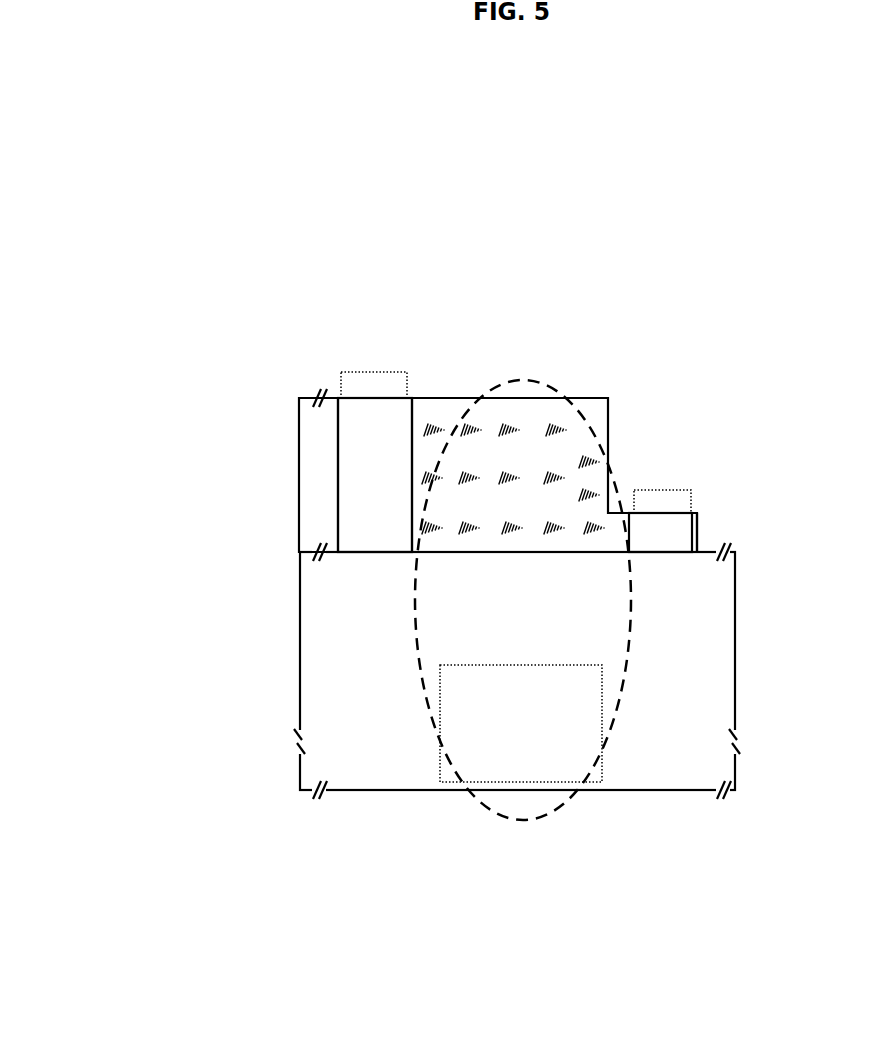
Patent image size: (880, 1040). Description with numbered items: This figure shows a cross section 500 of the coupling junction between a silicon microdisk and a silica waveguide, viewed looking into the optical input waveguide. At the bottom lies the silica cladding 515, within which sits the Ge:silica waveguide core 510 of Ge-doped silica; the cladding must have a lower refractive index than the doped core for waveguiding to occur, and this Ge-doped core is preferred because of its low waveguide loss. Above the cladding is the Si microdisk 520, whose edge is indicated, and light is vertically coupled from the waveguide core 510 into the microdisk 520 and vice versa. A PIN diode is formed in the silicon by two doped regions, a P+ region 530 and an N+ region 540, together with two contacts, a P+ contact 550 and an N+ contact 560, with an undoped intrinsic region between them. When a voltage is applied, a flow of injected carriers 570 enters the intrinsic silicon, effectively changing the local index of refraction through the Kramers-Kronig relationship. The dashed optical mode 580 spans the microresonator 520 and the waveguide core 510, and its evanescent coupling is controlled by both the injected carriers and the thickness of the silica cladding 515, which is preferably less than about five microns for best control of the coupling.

The cross section 500 is at (155, 142).
The Ge:silica waveguide core 510 is at (473, 853).
The silica cladding 515 is at (603, 611).
The Si microdisk 520 is at (612, 450).
The P+ region 530 is at (367, 553).
The N+ region 540 is at (663, 533).
The P+ contact 550 is at (370, 383).
The N+ contact 560 is at (660, 493).
The flow of injected carriers 570 is at (513, 470).
The optical mode 580 is at (466, 412).